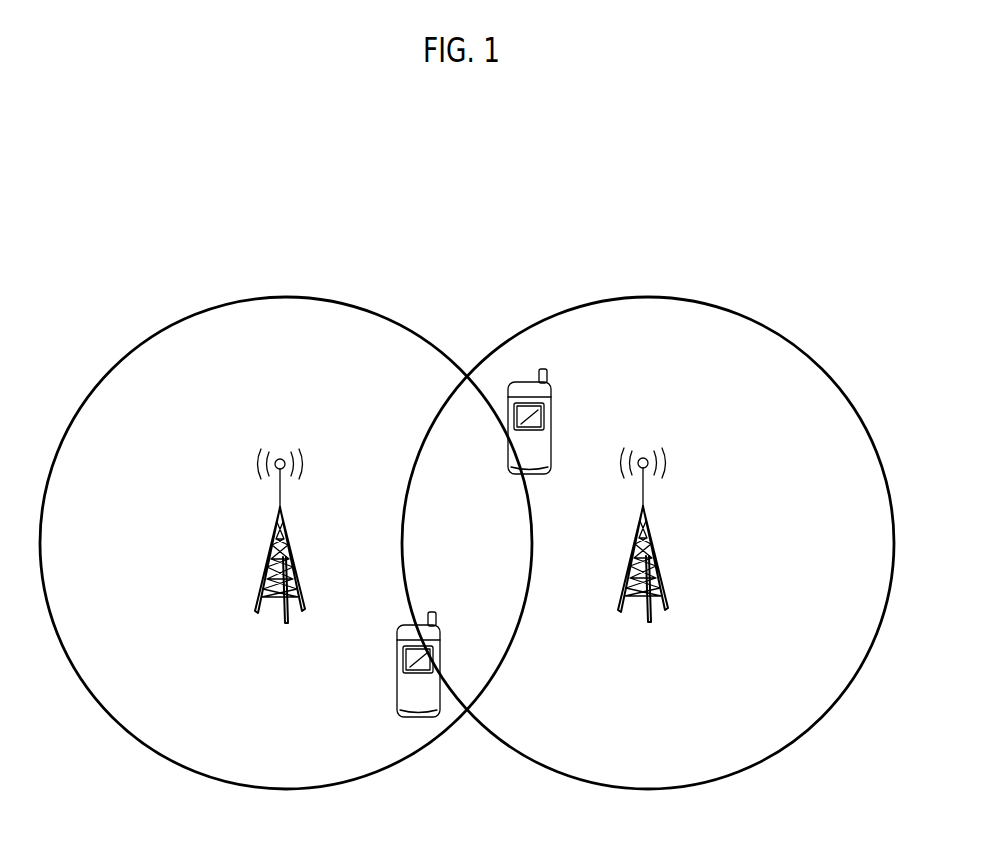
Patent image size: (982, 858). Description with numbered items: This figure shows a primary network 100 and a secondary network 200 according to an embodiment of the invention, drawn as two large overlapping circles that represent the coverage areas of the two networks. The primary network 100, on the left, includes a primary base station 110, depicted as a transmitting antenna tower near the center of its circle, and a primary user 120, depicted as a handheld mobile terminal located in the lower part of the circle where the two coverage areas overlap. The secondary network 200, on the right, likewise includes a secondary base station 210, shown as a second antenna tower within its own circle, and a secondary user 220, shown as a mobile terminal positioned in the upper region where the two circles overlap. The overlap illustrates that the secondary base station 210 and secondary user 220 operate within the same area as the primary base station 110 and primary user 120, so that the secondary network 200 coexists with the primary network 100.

The primary network 100 is at (280, 297).
The secondary network 200 is at (646, 296).
The primary base station 110 is at (268, 549).
The primary user 120 is at (397, 677).
The secondary base station 210 is at (655, 548).
The secondary user 220 is at (553, 410).